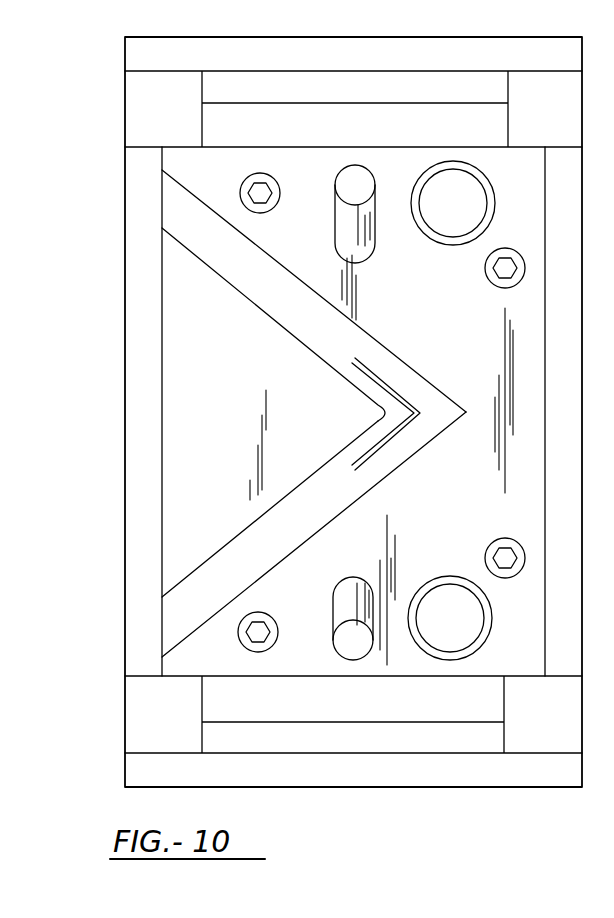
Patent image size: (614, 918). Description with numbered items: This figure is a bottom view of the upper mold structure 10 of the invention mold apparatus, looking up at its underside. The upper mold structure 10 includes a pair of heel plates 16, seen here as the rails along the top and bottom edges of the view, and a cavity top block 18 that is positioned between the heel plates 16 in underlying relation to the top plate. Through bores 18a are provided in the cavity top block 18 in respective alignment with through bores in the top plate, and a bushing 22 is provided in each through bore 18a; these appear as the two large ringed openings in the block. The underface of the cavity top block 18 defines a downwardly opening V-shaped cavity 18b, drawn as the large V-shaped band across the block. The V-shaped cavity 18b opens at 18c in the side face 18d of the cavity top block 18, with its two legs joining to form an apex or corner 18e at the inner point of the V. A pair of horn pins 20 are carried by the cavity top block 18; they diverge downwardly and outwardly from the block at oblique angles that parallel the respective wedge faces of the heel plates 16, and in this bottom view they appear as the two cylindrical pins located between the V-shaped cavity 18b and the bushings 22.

The upper mold structure 10 is at (84, 150).
The heel plates 16 is at (455, 92).
The cavity top block 18 is at (441, 522).
The through bores 18a is at (438, 238).
The V-shaped cavity 18b is at (302, 340).
The cavity opening 18c is at (177, 585).
The side face 18d is at (160, 450).
The apex 18e is at (429, 382).
The horn pins 20 is at (352, 228).
The bushing 22 is at (457, 245).